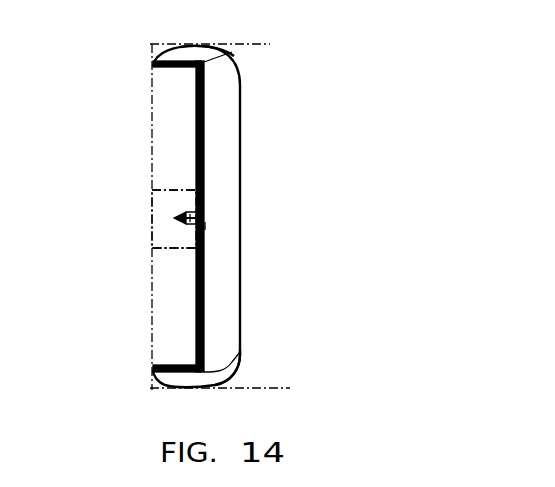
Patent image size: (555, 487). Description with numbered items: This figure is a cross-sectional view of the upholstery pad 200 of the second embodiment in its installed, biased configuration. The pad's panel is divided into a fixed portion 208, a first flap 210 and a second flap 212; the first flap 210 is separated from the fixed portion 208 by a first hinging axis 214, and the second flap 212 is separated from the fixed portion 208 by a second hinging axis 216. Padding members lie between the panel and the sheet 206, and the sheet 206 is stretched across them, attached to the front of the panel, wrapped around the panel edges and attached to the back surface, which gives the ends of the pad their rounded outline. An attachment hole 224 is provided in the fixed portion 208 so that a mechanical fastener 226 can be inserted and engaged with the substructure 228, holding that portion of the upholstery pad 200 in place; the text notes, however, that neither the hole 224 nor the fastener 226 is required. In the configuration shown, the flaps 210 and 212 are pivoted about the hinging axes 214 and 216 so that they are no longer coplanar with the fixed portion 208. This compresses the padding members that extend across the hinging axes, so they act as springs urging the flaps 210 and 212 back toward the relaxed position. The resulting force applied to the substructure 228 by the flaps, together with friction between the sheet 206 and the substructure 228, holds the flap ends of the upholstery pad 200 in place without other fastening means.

The upholstery pad 200 is at (313, 109).
The sheet 206 is at (240, 195).
The fixed portion 208 is at (195, 163).
The first flap 210 is at (192, 365).
The second flap 212 is at (183, 67).
The first hinging axis 214 is at (238, 358).
The second hinging axis 216 is at (232, 53).
The attachment hole 224 is at (205, 220).
The mechanical fastener 226 is at (205, 225).
The substructure 228 is at (150, 228).